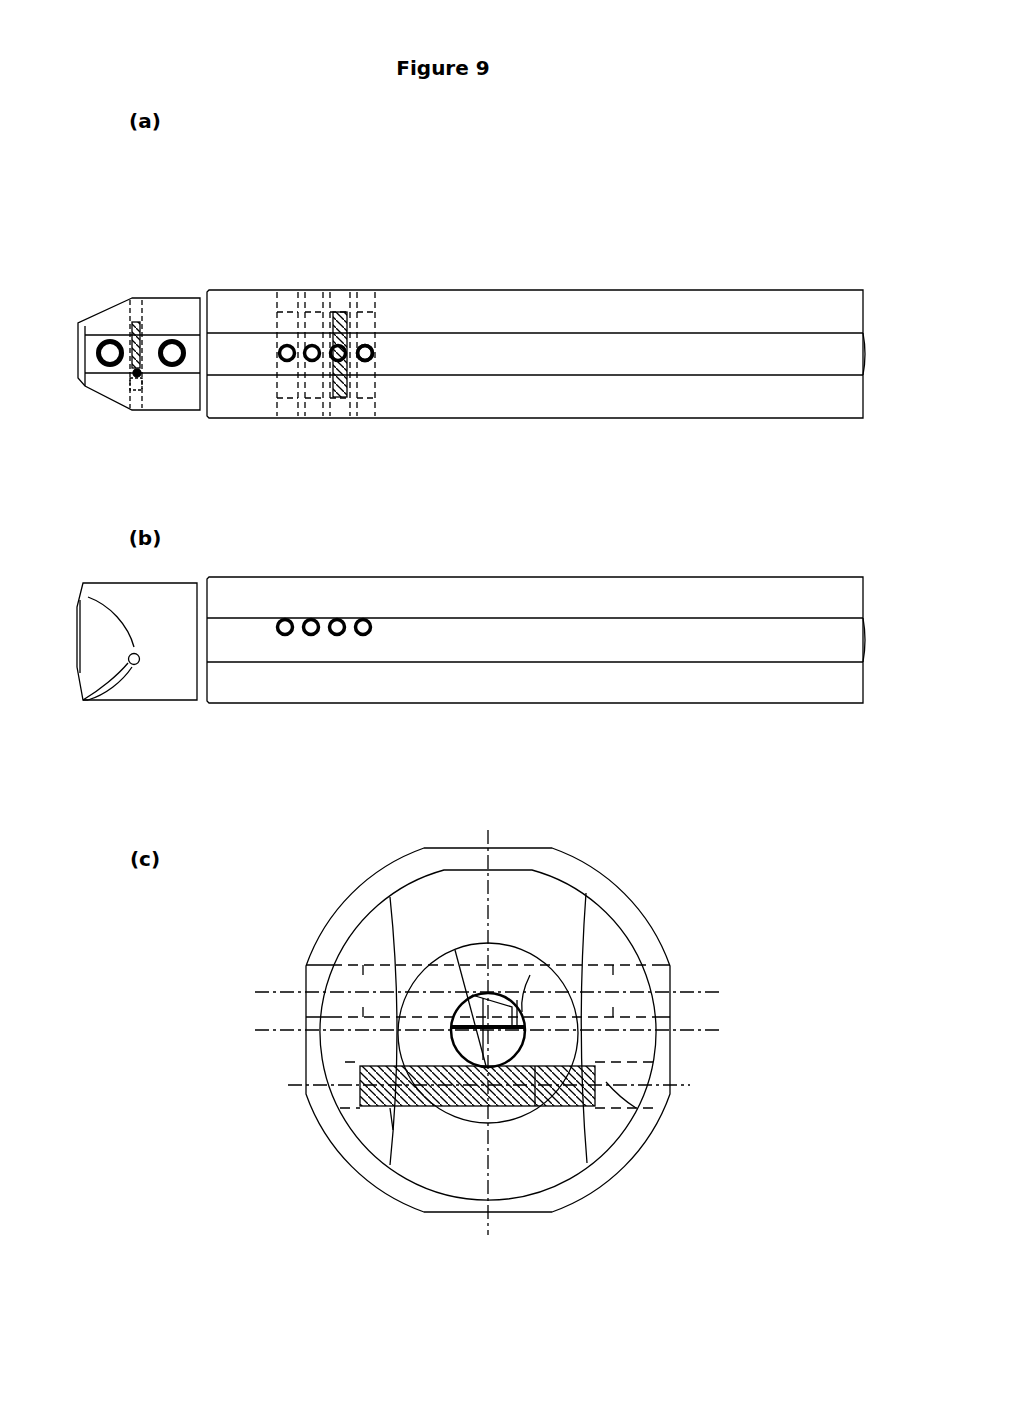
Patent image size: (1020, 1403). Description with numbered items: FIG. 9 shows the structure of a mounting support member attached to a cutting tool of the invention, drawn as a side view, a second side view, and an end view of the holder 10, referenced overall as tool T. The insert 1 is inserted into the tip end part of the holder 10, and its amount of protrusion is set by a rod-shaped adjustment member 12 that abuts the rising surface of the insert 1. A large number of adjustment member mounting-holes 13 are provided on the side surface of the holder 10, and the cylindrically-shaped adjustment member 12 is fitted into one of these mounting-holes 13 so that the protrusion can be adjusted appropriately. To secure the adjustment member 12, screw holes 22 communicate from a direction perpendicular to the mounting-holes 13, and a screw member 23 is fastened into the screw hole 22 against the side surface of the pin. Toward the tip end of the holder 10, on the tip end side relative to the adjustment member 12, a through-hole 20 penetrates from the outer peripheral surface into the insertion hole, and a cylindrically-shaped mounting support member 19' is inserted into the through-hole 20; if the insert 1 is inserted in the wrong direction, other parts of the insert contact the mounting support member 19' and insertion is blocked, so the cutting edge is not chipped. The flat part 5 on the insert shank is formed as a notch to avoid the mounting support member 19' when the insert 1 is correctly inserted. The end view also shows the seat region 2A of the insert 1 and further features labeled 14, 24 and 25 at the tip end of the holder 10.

The holder 10 is at (635, 281).
The fixing holes 14 is at (110, 337).
The adjustment member mounting-holes 13 is at (267, 280).
The adjustment member 12 is at (342, 420).
The screw member 23 is at (335, 332).
The screw holes 22 is at (377, 350).
The slot 24 is at (130, 392).
The hatched pin member 25 is at (140, 377).
The through-hole 20 is at (135, 380).
The mounting support member 19' is at (261, 801).
The tool T is at (320, 909).
The flat part 5 is at (453, 947).
The insert seat 2A is at (580, 953).
The insert 1 is at (455, 1042).